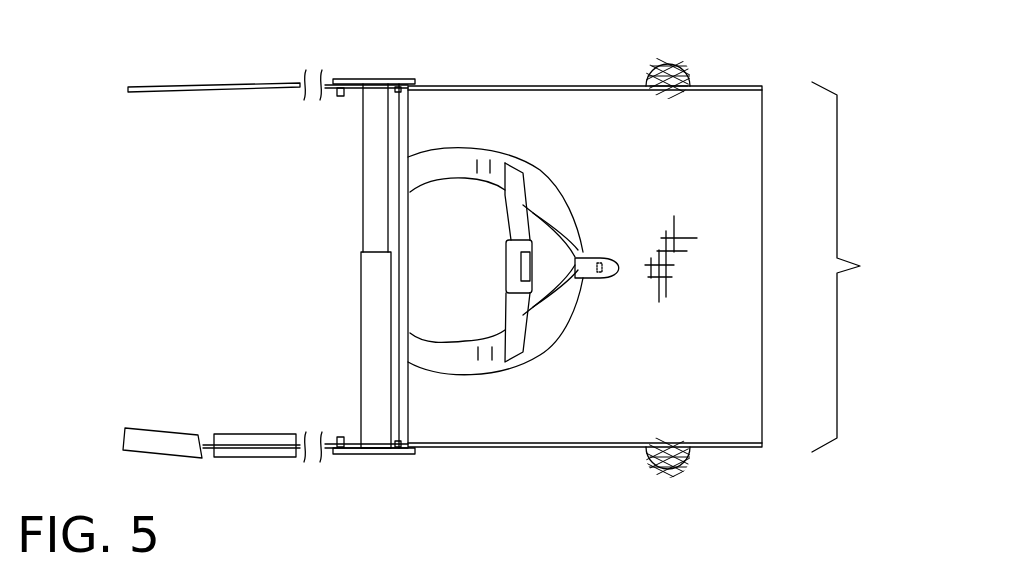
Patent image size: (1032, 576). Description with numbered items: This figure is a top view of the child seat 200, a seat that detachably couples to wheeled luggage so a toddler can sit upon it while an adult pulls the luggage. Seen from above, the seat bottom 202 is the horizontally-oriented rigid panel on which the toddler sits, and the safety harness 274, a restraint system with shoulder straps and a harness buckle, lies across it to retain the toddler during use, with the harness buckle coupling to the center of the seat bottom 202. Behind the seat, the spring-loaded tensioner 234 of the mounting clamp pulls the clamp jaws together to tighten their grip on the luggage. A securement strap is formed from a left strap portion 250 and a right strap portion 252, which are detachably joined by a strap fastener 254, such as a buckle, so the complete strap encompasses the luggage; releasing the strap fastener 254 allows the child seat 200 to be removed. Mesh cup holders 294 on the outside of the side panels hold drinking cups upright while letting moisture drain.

The child seat 200 is at (873, 267).
The seat bottom 202 is at (473, 425).
The spring-loaded tensioner 234 is at (363, 277).
The left strap portion 250 is at (178, 90).
The right strap portion 252 is at (253, 450).
The strap fastener 254 is at (152, 437).
The safety harness 274 is at (462, 165).
The mesh cup holders 294 is at (658, 62).